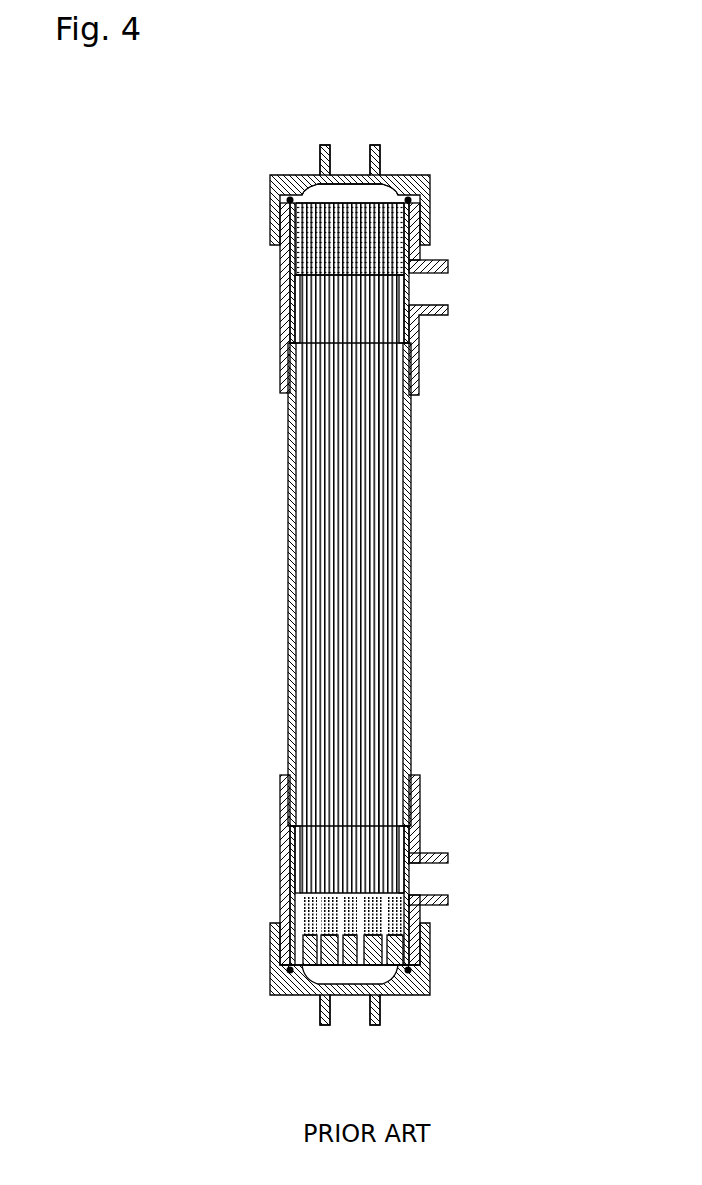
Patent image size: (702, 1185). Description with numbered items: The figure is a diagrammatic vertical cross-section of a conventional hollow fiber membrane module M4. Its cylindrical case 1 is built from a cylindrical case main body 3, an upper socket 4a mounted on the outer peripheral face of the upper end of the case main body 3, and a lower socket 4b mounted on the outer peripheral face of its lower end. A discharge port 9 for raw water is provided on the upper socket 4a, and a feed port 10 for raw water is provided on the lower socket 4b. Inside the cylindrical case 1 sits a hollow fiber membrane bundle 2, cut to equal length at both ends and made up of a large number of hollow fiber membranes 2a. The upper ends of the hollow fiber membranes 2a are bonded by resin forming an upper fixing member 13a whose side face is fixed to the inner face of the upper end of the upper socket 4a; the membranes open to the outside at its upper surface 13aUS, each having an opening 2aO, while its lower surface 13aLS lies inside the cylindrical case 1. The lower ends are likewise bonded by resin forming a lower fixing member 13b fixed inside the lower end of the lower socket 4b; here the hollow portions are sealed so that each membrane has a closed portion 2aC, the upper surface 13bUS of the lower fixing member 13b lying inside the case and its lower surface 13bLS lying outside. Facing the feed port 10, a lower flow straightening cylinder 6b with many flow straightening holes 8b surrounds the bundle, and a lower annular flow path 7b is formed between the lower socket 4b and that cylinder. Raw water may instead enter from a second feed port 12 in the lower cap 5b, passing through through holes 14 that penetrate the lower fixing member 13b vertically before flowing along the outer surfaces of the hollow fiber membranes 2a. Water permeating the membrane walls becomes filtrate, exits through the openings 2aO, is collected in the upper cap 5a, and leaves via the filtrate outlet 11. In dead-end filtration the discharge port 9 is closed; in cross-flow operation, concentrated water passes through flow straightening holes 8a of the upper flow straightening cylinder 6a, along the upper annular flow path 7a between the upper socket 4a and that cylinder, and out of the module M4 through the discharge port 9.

The cylindrical case 1 is at (290, 563).
The conventional hollow fiber membrane module M4 is at (263, 582).
The hollow fiber membrane bundle 2 is at (398, 479).
The hollow fiber membrane 2a is at (377, 583).
The opening 2aO is at (373, 205).
The closed portion 2aC is at (373, 925).
The cylindrical case main body 3 is at (290, 513).
The upper socket 4a is at (420, 367).
The lower socket 4b is at (418, 802).
The upper cap 5a is at (430, 190).
The lower cap 5b is at (430, 943).
The upper flow straightening cylinder 6a is at (297, 332).
The lower flow straightening cylinder 6b is at (297, 860).
The upper annular flow path 7a is at (405, 330).
The lower annular flow path 7b is at (402, 840).
The flow straightening holes 8a is at (297, 320).
The flow straightening holes 8b is at (297, 877).
The discharge port 9 is at (435, 297).
The feed port 10 is at (442, 878).
The filtrate outlet 11 is at (352, 148).
The second feed port 12 is at (352, 1015).
The upper fixing member 13a is at (408, 262).
The upper surface 13aUS is at (325, 205).
The lower surface 13aLS is at (335, 275).
The lower fixing member 13b is at (405, 915).
The upper surface 13bUS is at (335, 893).
The lower surface 13bLS is at (328, 963).
The through holes 14 is at (315, 965).